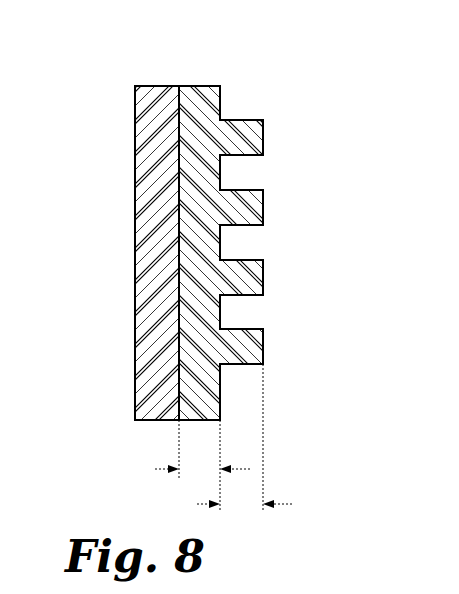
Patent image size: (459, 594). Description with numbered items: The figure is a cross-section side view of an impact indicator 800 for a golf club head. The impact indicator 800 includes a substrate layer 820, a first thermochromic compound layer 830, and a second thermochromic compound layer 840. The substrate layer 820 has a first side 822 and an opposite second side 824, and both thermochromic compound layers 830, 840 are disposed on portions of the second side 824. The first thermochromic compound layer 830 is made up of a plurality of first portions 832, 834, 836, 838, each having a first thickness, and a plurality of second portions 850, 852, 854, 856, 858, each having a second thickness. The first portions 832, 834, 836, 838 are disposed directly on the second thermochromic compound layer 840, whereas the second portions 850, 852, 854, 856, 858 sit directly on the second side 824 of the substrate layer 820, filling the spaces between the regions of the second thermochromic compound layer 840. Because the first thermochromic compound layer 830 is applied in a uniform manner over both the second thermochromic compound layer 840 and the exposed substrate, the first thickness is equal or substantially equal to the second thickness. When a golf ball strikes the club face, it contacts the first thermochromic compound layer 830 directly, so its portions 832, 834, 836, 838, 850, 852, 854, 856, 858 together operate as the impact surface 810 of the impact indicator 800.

The impact indicator 800 is at (117, 60).
The impact surface 810 is at (306, 180).
The substrate layer 820 is at (148, 108).
The first side 822 is at (135, 160).
The second side 824 is at (198, 118).
The first thermochromic compound layer 830 is at (198, 420).
The second thermochromic compound layer 840 is at (197, 88).
The second portion 850 is at (221, 98).
The second portion 852 is at (222, 172).
The second portion 854 is at (222, 240).
The second portion 856 is at (222, 312).
The second portion 858 is at (222, 390).
The first portion 832 is at (265, 130).
The first portion 834 is at (265, 203).
The first portion 836 is at (265, 272).
The first portion 838 is at (265, 342).